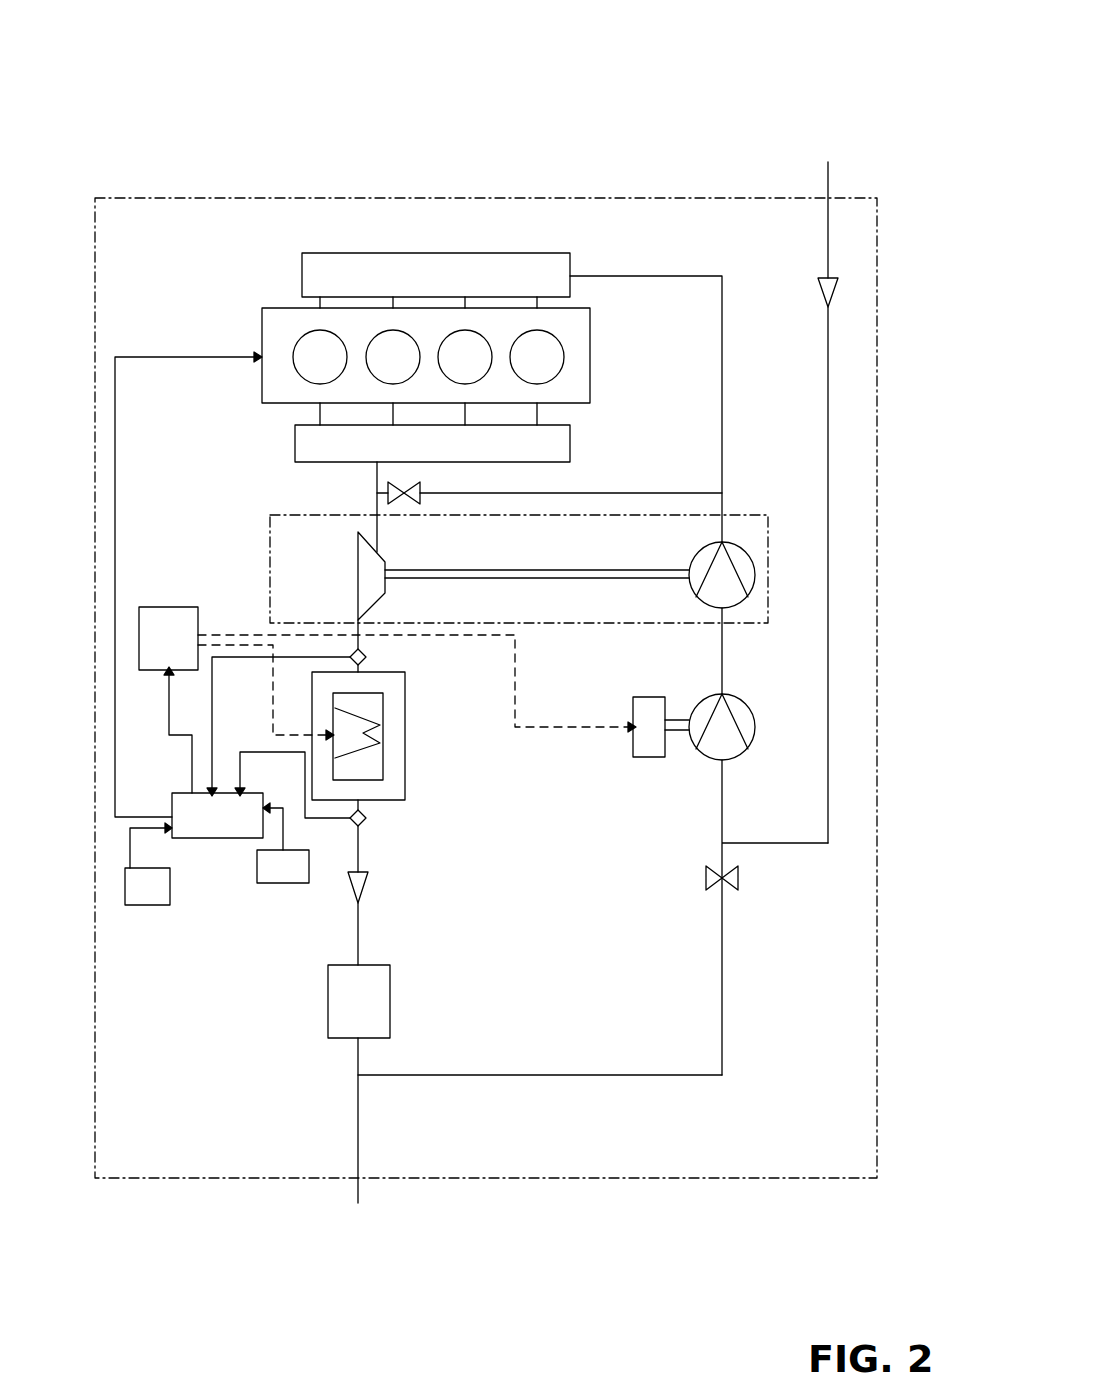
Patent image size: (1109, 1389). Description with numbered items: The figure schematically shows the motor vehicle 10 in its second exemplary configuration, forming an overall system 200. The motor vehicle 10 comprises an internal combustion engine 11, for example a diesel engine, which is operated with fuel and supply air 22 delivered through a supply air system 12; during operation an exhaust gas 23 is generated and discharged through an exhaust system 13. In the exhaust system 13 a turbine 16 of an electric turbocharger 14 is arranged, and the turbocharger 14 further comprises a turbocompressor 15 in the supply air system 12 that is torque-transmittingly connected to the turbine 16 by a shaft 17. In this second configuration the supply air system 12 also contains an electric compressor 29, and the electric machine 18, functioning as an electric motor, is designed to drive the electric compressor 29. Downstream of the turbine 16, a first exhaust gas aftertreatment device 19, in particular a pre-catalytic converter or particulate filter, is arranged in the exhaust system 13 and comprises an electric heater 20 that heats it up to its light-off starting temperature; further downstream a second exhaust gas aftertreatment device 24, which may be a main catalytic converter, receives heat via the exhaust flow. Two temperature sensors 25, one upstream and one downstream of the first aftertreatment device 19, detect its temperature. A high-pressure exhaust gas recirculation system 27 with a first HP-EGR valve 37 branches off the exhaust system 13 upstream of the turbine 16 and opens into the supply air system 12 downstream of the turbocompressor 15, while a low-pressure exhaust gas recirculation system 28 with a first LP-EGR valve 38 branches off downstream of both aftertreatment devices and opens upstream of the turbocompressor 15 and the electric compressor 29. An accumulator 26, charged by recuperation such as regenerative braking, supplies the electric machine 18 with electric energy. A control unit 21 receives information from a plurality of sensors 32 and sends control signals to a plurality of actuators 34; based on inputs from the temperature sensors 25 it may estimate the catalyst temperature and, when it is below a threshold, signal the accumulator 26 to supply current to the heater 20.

The engine system 200 is at (822, 24).
The motor vehicle 10 is at (302, 198).
The internal combustion engine 11 is at (278, 308).
The supply air system 12 is at (658, 276).
The exhaust system 13 is at (377, 470).
The electric turbocharger 14 is at (555, 623).
The turbocompressor 15 is at (755, 575).
The turbine 16 is at (358, 578).
The shaft 17 is at (540, 570).
The electric machine 18 is at (645, 757).
The first exhaust gas aftertreatment device 19 is at (405, 712).
The heater 20 is at (383, 760).
The control unit 21 is at (218, 838).
The supply air 22 is at (818, 290).
The exhaust gas 23 is at (348, 888).
The second exhaust gas aftertreatment device 24 is at (328, 1000).
The temperature sensor 25 is at (366, 660).
The accumulator 26 is at (170, 607).
The high-pressure exhaust gas recirculation system 27 is at (640, 493).
The low-pressure exhaust gas recirculation system 28 is at (545, 1075).
The electric compressor 29 is at (755, 727).
The sensors 32 is at (148, 864).
The actuators 34 is at (283, 843).
The first HP-EGR valve 37 is at (418, 486).
The first LP-EGR valve 38 is at (714, 888).